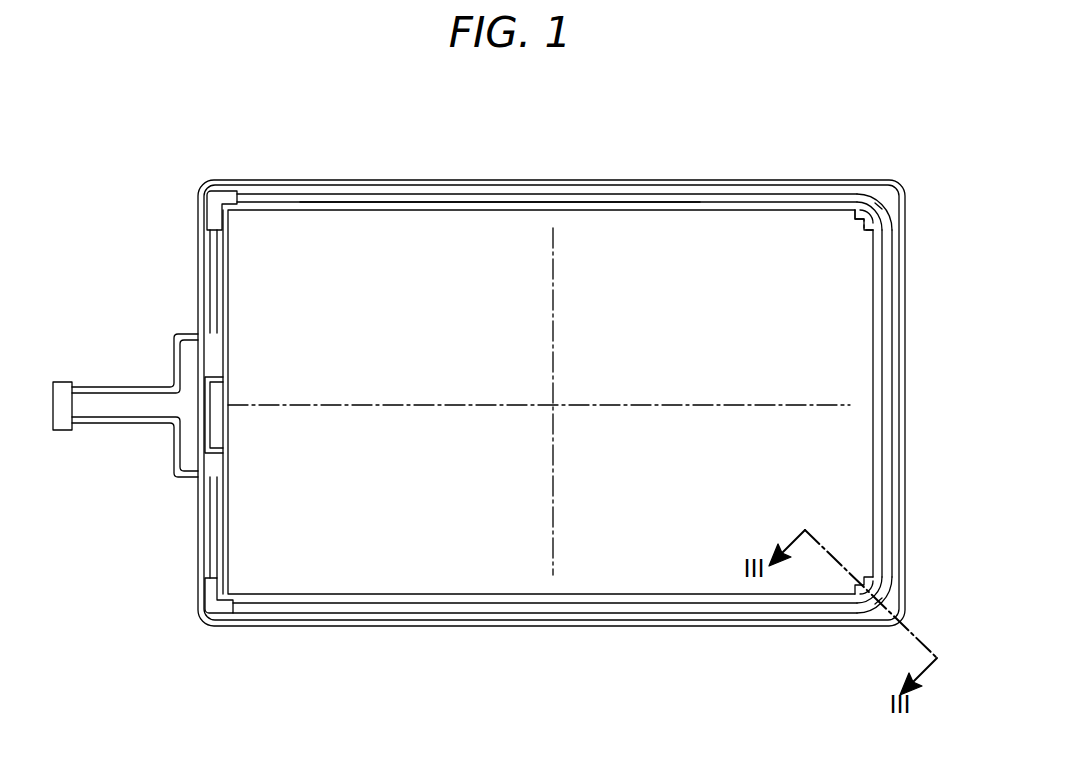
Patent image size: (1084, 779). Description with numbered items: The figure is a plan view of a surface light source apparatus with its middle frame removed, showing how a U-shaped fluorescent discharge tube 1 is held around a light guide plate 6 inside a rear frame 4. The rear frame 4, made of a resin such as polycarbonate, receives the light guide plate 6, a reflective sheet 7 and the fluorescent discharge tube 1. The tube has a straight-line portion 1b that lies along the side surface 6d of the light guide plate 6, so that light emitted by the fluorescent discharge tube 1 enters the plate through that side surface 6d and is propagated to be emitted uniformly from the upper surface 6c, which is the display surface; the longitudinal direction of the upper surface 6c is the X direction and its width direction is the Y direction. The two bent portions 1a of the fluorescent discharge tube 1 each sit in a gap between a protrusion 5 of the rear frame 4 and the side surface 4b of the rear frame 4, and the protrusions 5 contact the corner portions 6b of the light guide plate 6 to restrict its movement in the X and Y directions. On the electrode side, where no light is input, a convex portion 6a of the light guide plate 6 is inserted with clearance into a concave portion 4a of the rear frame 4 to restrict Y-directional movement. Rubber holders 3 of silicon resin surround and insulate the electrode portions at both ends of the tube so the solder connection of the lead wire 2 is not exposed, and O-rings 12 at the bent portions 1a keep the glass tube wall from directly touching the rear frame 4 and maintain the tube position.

The fluorescent discharge tube 1 is at (410, 185).
The bent portion 1a is at (866, 199).
The straight-line portion 1b is at (568, 186).
The lead wire 2 is at (212, 268).
The rubber holder 3 is at (214, 205).
The rear frame 4 is at (344, 193).
The concave portion 4a is at (203, 387).
The side surface 4b is at (880, 612).
The protrusion 5 is at (858, 208).
The light guide plate 6 is at (615, 560).
The convex portion 6a is at (217, 428).
The corner portion 6b is at (862, 221).
The upper surface 6c is at (493, 455).
The side surface 6d is at (477, 202).
The reflective sheet 7 is at (708, 627).
The O-ring 12 is at (890, 214).